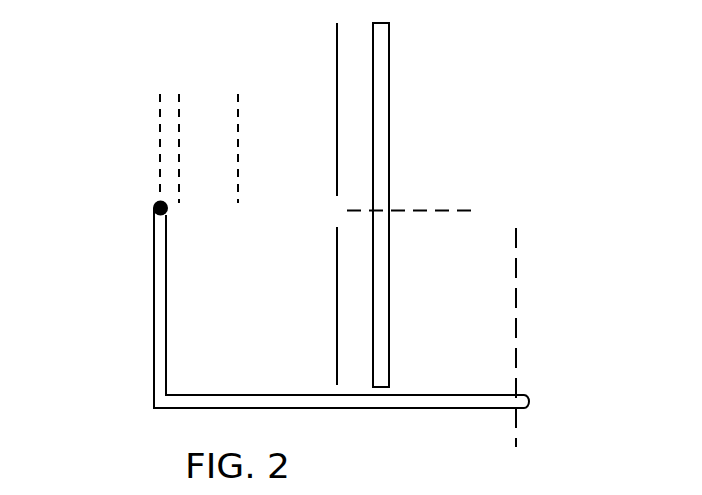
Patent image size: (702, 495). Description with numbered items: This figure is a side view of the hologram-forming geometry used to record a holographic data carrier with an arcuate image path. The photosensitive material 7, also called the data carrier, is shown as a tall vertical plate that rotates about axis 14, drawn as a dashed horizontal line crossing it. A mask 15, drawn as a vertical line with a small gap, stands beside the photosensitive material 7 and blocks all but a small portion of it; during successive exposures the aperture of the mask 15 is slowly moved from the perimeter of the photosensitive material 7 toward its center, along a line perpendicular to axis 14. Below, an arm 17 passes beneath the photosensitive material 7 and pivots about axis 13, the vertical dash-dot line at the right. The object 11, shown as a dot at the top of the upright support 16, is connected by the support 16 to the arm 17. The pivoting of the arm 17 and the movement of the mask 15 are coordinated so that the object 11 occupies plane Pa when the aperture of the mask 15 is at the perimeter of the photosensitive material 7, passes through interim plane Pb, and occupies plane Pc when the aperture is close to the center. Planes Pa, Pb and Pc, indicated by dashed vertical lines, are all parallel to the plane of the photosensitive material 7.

The photosensitive material 7 is at (383, 47).
The object 11 is at (151, 211).
The axis 13 is at (520, 375).
The axis 14 is at (427, 210).
The mask 15 is at (336, 197).
The support 16 is at (158, 268).
The arm 17 is at (207, 394).
The plane Pa is at (241, 136).
The interim plane Pb is at (184, 136).
The plane Pc is at (158, 134).